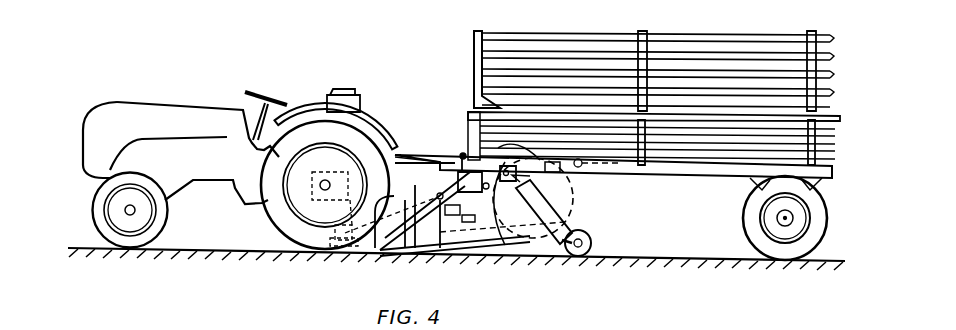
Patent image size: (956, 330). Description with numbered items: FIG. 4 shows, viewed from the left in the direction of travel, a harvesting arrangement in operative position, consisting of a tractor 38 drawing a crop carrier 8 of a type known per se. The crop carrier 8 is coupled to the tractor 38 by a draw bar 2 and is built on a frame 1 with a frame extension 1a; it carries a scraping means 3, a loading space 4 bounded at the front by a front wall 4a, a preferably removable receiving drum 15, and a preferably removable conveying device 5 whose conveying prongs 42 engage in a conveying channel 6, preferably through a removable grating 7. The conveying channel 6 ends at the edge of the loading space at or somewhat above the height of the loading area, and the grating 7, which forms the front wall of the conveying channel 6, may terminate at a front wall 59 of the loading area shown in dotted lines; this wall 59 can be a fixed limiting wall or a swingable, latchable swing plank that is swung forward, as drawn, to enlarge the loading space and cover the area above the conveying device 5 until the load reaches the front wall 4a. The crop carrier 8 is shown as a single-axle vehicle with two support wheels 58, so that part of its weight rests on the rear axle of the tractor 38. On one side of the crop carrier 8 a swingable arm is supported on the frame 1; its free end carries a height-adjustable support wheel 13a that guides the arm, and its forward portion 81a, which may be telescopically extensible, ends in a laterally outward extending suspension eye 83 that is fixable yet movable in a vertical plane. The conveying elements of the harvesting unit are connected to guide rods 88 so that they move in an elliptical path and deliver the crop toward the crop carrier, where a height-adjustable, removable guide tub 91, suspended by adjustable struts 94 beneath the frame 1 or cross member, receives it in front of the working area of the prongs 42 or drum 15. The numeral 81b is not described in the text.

The tractor 38 is at (196, 94).
The loading space 4 is at (629, 139).
The front wall 4a is at (474, 97).
The crop carrier 8 is at (466, 45).
The scraping means 3 is at (662, 174).
The frame 1 is at (624, 174).
The frame extension 1a is at (464, 152).
The draw bar 2 is at (414, 166).
The conveying device 5 is at (517, 163).
The conveying channel 6 is at (562, 180).
The grating 7 is at (504, 252).
The support wheel 13a is at (318, 258).
The receiving drum 15 is at (556, 252).
The conveying prongs 42 is at (529, 252).
The support wheels 58 is at (812, 240).
The front wall 59 is at (500, 148).
The forward portion of arm 81a is at (348, 236).
The mounting bracket 81b is at (407, 250).
The suspension eye 83 is at (376, 250).
The guide rods 88 is at (466, 154).
The guide tub 91 is at (438, 203).
The struts 94 is at (546, 162).